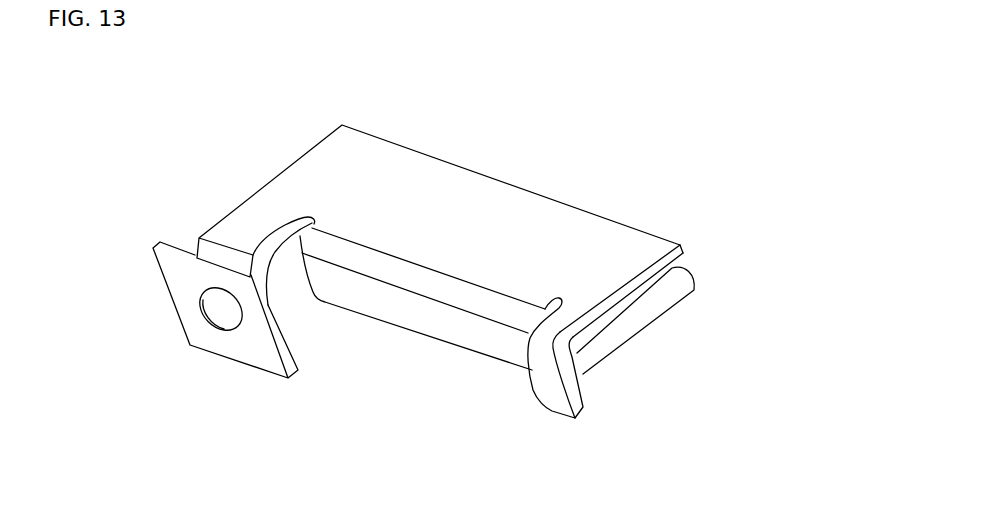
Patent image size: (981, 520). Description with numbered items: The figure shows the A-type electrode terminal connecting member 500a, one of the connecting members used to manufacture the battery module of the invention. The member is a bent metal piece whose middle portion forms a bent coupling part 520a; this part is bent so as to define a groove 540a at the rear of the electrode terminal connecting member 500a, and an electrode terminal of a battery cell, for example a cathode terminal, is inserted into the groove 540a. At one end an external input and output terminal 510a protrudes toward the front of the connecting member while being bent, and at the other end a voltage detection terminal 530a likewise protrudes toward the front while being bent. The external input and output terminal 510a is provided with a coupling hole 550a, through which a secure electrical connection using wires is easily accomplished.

The electrode terminal connecting member 500a is at (147, 104).
The external input and output terminal 510a is at (187, 320).
The bent coupling part 520a is at (407, 310).
The voltage detection terminal 530a is at (556, 385).
The groove 540a is at (670, 283).
The coupling hole 550a is at (202, 308).